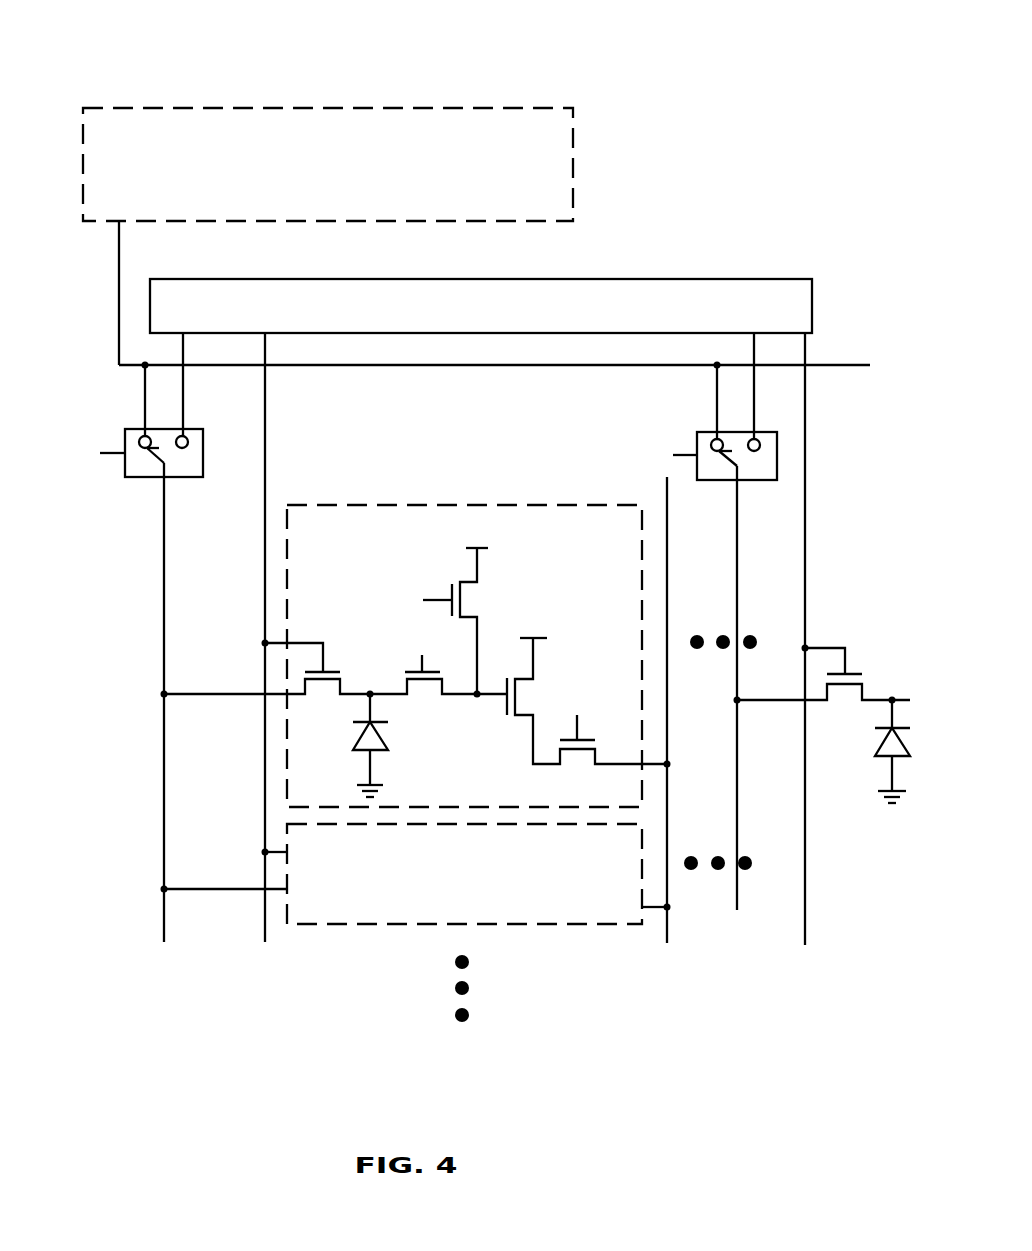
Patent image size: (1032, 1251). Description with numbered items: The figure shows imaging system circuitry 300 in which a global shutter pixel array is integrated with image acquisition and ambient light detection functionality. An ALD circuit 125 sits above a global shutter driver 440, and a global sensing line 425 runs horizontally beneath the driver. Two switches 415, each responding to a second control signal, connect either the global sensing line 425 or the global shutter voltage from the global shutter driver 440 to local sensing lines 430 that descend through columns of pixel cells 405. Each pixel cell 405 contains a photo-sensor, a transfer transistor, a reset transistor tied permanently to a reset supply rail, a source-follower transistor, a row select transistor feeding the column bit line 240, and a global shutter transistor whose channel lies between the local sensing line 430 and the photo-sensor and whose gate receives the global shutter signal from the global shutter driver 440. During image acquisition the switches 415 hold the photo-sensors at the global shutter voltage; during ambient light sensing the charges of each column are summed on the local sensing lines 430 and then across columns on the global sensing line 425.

The imaging system circuitry 300 is at (664, 98).
The ALD circuit 125 is at (405, 182).
The global shutter driver 440 is at (612, 318).
The global sensing line 425 is at (494, 392).
The switches 415 is at (150, 477).
The pixel cell 405 is at (564, 564).
The local sensing line 430 is at (755, 1005).
The column bit line 240 is at (666, 935).